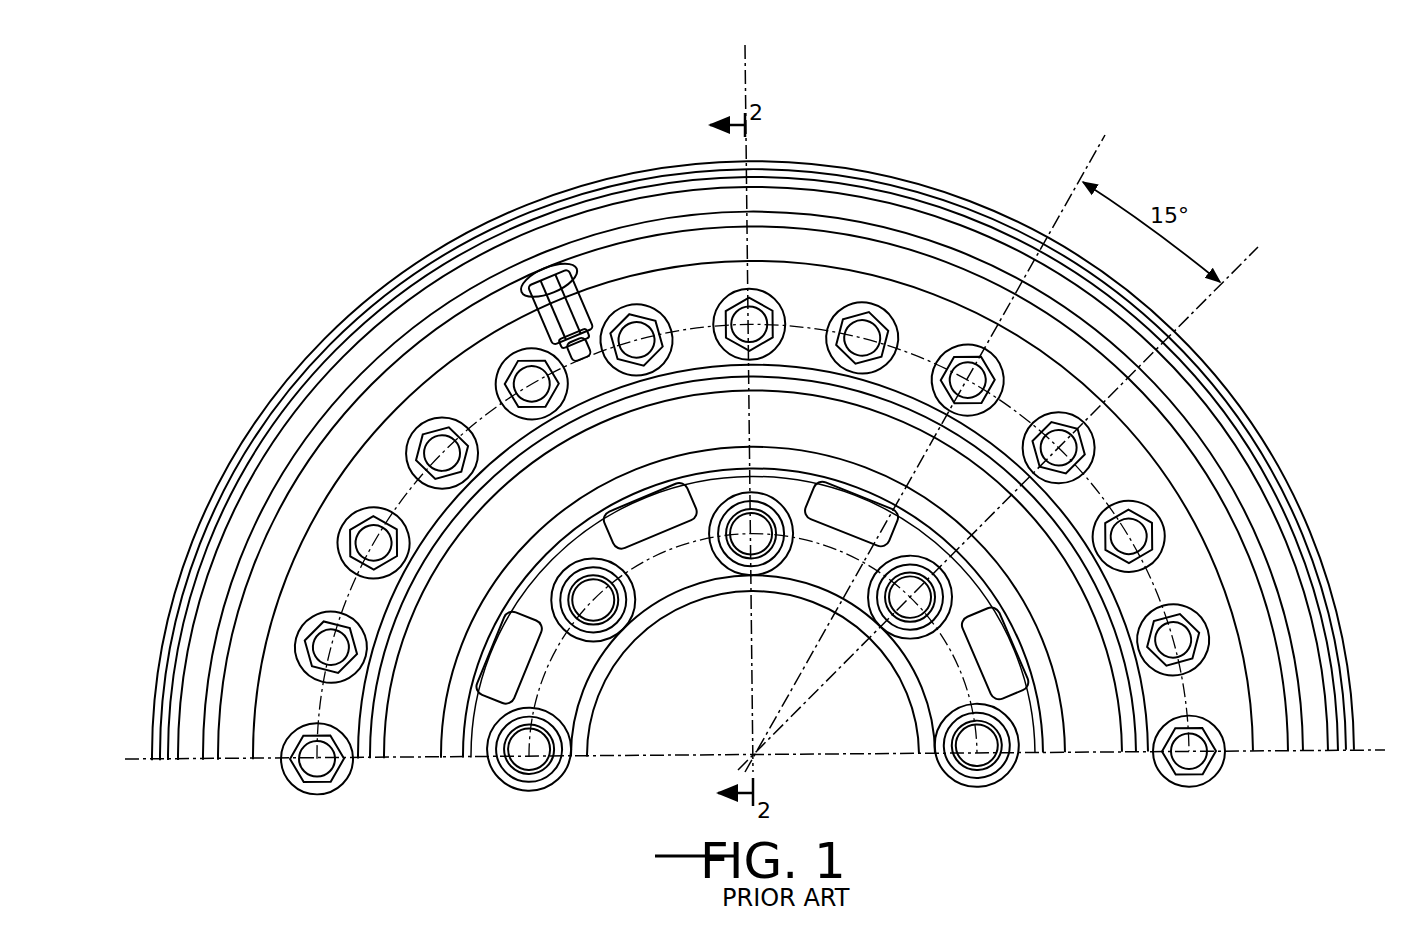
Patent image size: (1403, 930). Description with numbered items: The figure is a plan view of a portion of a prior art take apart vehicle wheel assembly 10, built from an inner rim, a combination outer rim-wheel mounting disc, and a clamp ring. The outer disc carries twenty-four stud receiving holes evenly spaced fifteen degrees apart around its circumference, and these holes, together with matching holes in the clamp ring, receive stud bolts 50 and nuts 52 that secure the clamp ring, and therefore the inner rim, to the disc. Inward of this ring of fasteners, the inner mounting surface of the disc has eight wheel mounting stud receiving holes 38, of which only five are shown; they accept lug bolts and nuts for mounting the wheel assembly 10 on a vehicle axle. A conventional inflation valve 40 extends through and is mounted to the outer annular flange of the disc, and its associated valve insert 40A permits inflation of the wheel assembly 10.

The take apart vehicle wheel assembly 10 is at (813, 113).
The wheel mounting stud receiving holes 38 is at (770, 548).
The inflation valve 40 is at (522, 278).
The valve insert 40A is at (588, 358).
The stud bolts 50 is at (858, 340).
The nuts 52 is at (881, 316).